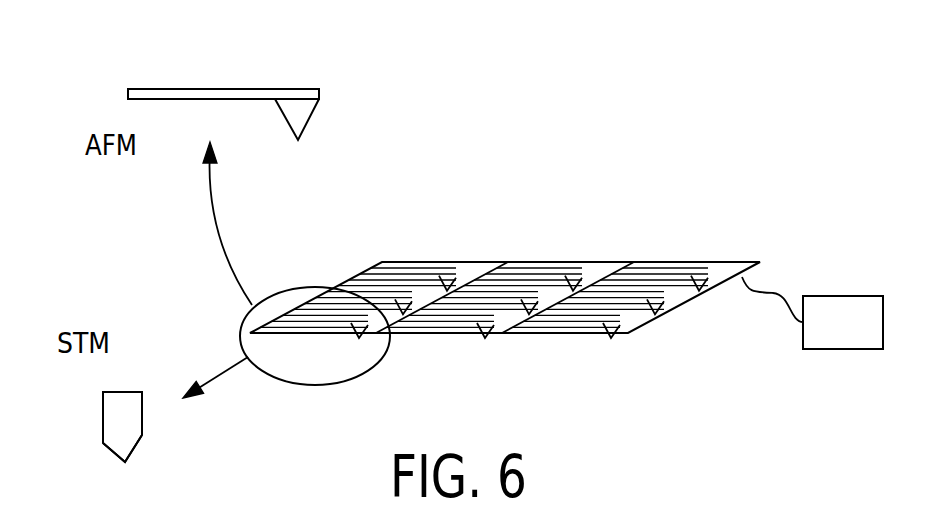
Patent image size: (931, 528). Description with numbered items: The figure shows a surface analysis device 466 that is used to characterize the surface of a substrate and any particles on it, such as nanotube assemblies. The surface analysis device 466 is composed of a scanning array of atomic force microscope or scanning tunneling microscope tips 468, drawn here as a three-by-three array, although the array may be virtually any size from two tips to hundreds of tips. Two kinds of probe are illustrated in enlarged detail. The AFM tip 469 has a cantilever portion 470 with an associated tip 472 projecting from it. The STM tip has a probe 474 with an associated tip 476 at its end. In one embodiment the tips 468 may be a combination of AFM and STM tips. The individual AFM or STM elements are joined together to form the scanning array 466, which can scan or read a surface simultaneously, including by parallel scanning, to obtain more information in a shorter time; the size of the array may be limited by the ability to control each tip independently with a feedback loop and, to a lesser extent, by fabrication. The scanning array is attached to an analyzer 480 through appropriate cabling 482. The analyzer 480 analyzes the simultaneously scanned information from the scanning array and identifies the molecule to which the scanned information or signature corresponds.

The surface analysis device 466 is at (505, 289).
The tips 468 is at (616, 335).
The AFM tip 469 is at (243, 92).
The cantilever portion 470 is at (212, 92).
The tip 472 is at (302, 110).
The probe 474 is at (121, 421).
The tip 476 is at (125, 438).
The analyzer 480 is at (868, 334).
The cabling 482 is at (773, 293).